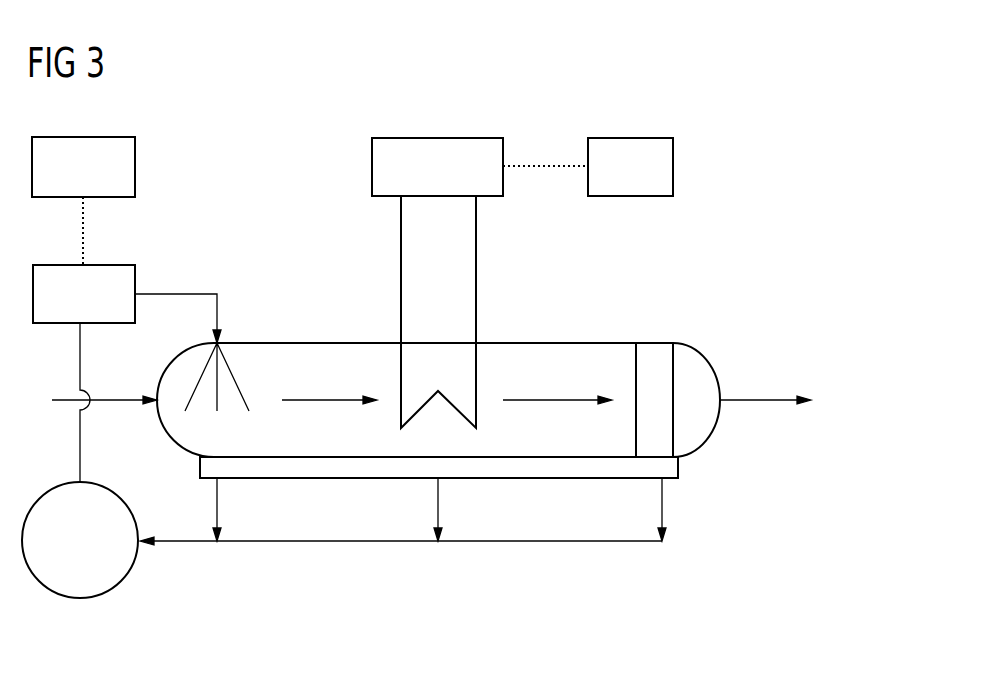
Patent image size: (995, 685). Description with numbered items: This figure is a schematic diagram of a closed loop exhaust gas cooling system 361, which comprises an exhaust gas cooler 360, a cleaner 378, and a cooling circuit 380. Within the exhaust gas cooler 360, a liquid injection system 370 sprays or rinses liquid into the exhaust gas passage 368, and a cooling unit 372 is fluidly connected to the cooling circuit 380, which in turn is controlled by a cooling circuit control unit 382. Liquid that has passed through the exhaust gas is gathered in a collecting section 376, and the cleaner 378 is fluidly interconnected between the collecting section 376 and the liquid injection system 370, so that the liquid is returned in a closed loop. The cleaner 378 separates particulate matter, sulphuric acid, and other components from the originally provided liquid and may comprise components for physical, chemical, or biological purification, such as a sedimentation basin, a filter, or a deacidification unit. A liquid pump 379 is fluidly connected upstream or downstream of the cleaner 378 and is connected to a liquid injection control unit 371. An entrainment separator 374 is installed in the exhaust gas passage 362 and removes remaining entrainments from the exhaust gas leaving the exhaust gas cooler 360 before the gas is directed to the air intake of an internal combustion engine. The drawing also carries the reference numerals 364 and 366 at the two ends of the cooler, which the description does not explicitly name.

The exhaust gas cooler 360 is at (438, 359).
The closed loop exhaust gas cooling system 361 is at (325, 112).
The exhaust gas passage 362 is at (470, 458).
The inlet 364 is at (157, 412).
The outlet 366 is at (720, 412).
The exhaust gas passage 368 is at (343, 350).
The liquid injection system 370 is at (236, 372).
The liquid injection control unit 371 is at (135, 165).
The cooling unit 372 is at (476, 367).
The entrainment separator 374 is at (673, 373).
The collecting section 376 is at (347, 478).
The cleaner 378 is at (80, 598).
The liquid pump 379 is at (135, 286).
The cooling circuit 380 is at (438, 137).
The cooling circuit control unit 382 is at (632, 137).